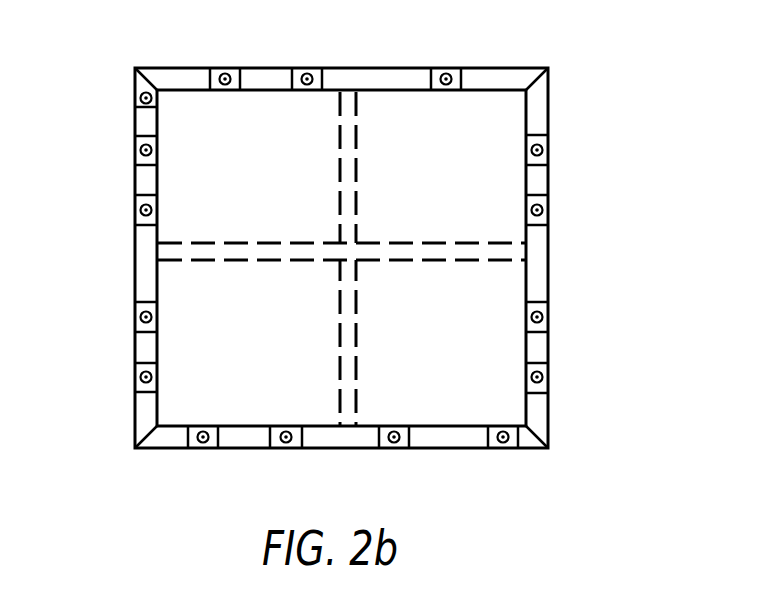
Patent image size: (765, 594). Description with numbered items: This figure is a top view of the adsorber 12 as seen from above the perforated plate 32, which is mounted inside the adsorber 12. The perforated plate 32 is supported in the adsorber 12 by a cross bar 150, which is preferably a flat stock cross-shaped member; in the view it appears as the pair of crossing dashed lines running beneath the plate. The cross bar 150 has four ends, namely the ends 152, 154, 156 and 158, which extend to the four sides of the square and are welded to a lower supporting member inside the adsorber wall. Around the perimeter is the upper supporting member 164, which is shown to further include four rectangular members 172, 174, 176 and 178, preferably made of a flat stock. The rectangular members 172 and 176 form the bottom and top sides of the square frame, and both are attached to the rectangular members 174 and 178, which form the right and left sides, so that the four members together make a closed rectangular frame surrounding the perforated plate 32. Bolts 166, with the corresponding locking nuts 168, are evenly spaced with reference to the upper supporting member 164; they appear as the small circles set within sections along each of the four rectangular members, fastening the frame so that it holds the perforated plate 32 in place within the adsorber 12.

The adsorber 12 is at (558, 107).
The perforated plate 32 is at (412, 143).
The cross bar 150 is at (338, 305).
The end 152 is at (493, 252).
The end 154 is at (342, 408).
The end 156 is at (198, 252).
The end 158 is at (343, 104).
The upper supporting member 164 is at (538, 348).
The bolt 166 is at (225, 68).
The locking nut 168 is at (233, 68).
The rectangular member 172 is at (242, 438).
The rectangular member 174 is at (538, 418).
The rectangular member 176 is at (508, 80).
The rectangular member 178 is at (145, 412).